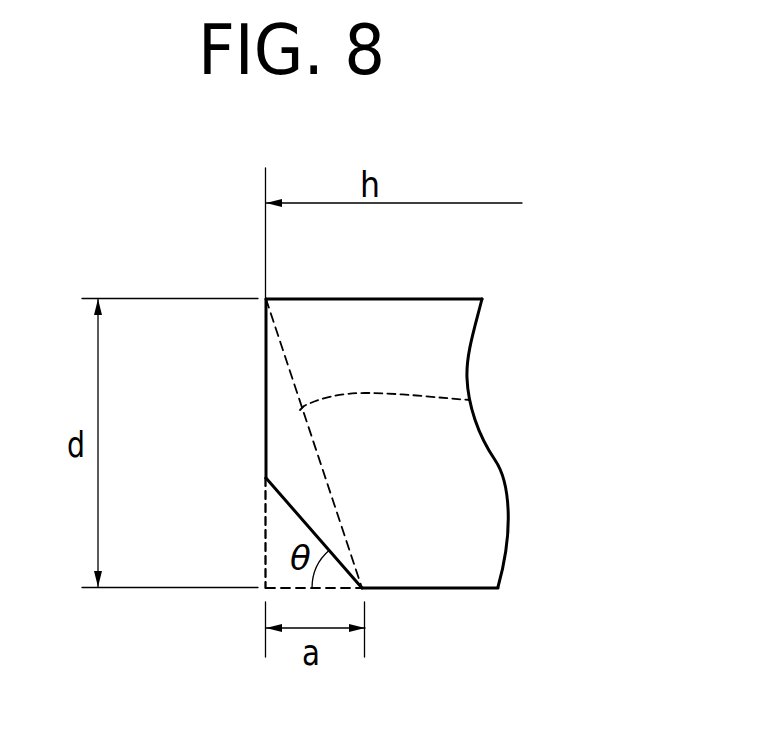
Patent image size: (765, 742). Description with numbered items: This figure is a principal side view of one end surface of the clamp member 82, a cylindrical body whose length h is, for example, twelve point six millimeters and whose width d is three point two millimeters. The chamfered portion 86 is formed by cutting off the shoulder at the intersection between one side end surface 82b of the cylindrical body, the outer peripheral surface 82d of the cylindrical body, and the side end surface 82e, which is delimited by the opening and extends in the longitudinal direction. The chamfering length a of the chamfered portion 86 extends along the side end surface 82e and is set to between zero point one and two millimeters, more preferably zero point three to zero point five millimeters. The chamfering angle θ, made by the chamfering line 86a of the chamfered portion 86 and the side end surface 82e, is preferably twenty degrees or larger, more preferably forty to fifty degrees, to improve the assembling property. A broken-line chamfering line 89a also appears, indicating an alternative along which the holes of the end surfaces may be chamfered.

The clamp member 82 is at (347, 439).
The one side end surface 82b is at (263, 400).
The outer peripheral surface 82d is at (448, 497).
The side end surface 82e is at (427, 588).
The chamfering line 89a is at (470, 400).
The chamfered portion 86 is at (273, 542).
The chamfering line 86a is at (280, 495).